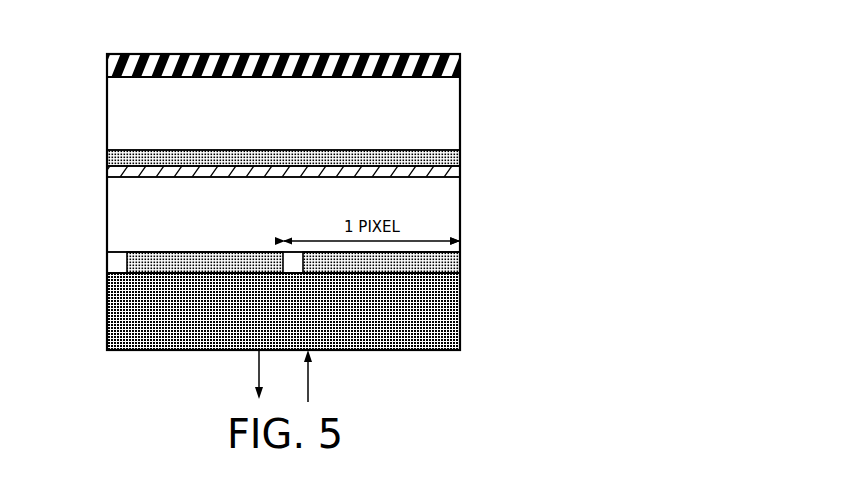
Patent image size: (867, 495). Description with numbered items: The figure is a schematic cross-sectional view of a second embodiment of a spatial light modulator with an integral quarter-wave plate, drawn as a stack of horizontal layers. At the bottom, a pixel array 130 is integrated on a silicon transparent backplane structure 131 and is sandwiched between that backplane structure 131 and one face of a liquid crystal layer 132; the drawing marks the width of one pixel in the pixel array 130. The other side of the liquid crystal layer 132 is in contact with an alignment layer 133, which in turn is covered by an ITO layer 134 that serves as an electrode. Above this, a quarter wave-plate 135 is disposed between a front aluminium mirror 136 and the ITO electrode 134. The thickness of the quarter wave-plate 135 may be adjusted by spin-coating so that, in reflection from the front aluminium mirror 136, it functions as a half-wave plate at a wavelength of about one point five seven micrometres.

The pixel array 130 is at (460, 258).
The backplane structure 131 is at (460, 327).
The liquid crystal layer 132 is at (107, 229).
The alignment layer 133 is at (107, 170).
The ITO layer 134 is at (460, 153).
The quarter wave-plate 135 is at (107, 90).
The front aluminium mirror 136 is at (460, 63).